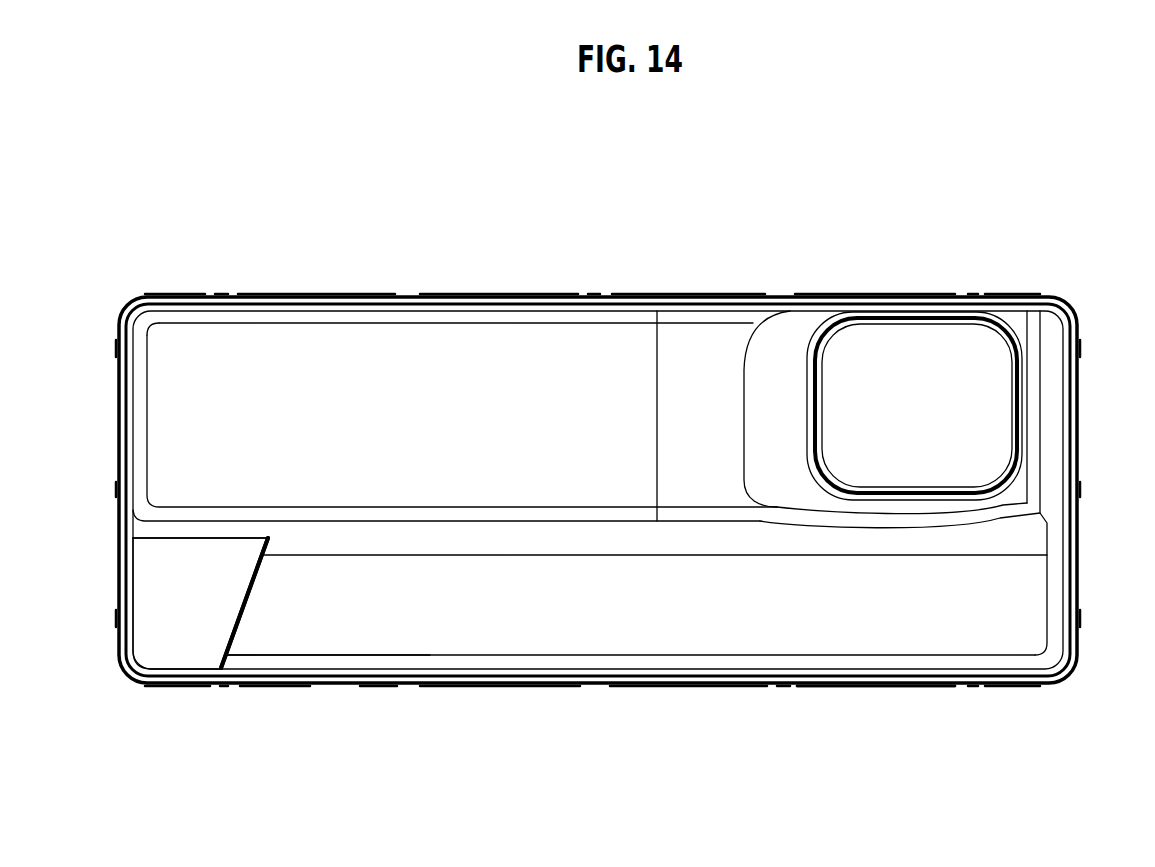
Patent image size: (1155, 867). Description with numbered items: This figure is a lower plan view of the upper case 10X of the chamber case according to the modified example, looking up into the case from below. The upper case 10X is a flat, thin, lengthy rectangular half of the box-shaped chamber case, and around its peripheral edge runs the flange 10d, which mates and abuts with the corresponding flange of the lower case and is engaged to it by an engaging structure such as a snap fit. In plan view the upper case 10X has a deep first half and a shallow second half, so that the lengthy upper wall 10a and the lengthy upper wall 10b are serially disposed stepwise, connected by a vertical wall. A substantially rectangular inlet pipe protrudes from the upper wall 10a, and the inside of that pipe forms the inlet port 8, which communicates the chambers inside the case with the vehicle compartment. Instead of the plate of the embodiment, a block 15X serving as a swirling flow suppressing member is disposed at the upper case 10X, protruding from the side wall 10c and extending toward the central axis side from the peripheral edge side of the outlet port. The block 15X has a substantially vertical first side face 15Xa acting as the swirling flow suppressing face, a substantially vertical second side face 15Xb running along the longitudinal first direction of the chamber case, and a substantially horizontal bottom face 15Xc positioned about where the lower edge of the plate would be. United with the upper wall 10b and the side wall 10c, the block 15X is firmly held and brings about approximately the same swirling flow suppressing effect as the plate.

The upper case 10X is at (448, 292).
The upper wall 10a is at (535, 352).
The upper wall 10b is at (595, 628).
The side wall 10c is at (436, 653).
The flange 10d is at (853, 688).
The inlet port 8 is at (920, 407).
The block 15X is at (243, 628).
The first side face 15Xa is at (250, 597).
The second side face 15Xb is at (197, 538).
The bottom face 15Xc is at (172, 648).